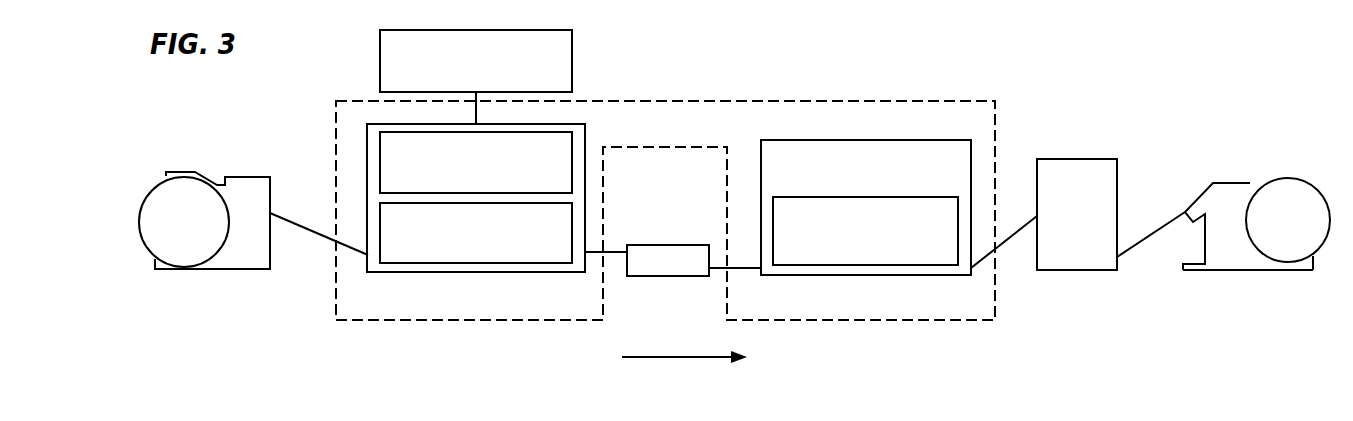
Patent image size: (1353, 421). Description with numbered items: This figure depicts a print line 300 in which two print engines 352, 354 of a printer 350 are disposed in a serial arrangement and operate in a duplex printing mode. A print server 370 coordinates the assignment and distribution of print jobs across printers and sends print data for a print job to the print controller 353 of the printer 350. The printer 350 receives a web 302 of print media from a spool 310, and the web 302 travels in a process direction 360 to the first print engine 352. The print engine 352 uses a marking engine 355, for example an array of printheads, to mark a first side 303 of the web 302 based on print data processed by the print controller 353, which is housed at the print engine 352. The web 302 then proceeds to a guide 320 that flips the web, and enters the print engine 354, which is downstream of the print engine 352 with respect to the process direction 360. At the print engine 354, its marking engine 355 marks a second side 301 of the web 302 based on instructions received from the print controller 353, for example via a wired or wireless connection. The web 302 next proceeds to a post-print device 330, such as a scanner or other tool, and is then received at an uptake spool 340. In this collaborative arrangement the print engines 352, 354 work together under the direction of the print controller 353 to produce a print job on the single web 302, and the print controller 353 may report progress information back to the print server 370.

The print line 300 is at (284, 336).
The second side 301 is at (357, 259).
The web 302 is at (616, 250).
The first side 303 is at (311, 227).
The spool 310 is at (228, 270).
The guide 320 is at (657, 277).
The post-print device 330 is at (1070, 272).
The uptake spool 340 is at (1233, 272).
The printer 350 is at (490, 321).
The print engine 352 is at (522, 273).
The print controller 353 is at (476, 162).
The print engine 354 is at (820, 278).
The marking engine 355 is at (669, 231).
The process direction 360 is at (652, 359).
The print server 370 is at (476, 77).